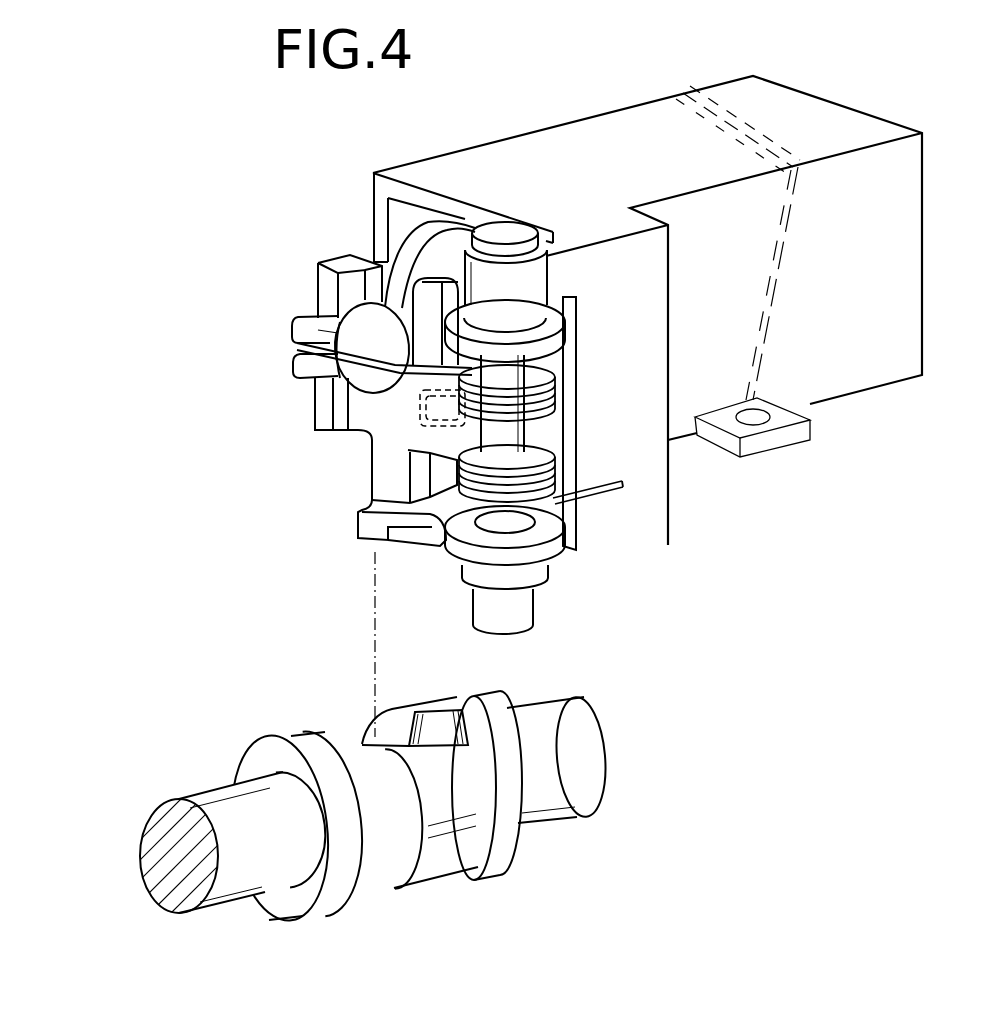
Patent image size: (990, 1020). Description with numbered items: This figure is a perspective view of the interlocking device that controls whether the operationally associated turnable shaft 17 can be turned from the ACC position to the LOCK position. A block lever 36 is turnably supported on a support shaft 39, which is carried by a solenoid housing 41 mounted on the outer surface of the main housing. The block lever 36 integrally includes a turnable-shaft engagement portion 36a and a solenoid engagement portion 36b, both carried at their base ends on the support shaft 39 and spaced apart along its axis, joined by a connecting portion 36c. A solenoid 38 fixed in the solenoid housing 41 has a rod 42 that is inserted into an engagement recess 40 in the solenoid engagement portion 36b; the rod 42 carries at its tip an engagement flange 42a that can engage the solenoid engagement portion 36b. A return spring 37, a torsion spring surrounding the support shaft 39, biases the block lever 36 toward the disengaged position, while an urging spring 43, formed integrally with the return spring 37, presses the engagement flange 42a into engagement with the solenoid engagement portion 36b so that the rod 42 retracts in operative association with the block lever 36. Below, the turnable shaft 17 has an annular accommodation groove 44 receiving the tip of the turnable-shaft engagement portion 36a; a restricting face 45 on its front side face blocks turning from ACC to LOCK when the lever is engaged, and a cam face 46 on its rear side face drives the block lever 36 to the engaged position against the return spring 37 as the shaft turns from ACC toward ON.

The operationally associated turnable shaft 17 is at (572, 760).
The block lever 36 is at (303, 431).
The turnable-shaft engagement portion 36a is at (362, 518).
The solenoid engagement portion 36b is at (355, 258).
The connecting portion 36c is at (388, 472).
The return spring 37 is at (452, 482).
The solenoid 38 is at (398, 230).
The support shaft 39 is at (517, 442).
The engagement recess 40 is at (388, 293).
The solenoid housing 41 is at (840, 132).
The rod 42 is at (470, 228).
The engagement flange 42a is at (358, 324).
The urging spring 43 is at (543, 387).
The accommodation groove 44 is at (453, 803).
The restricting face 45 is at (437, 725).
The cam face 46 is at (365, 738).